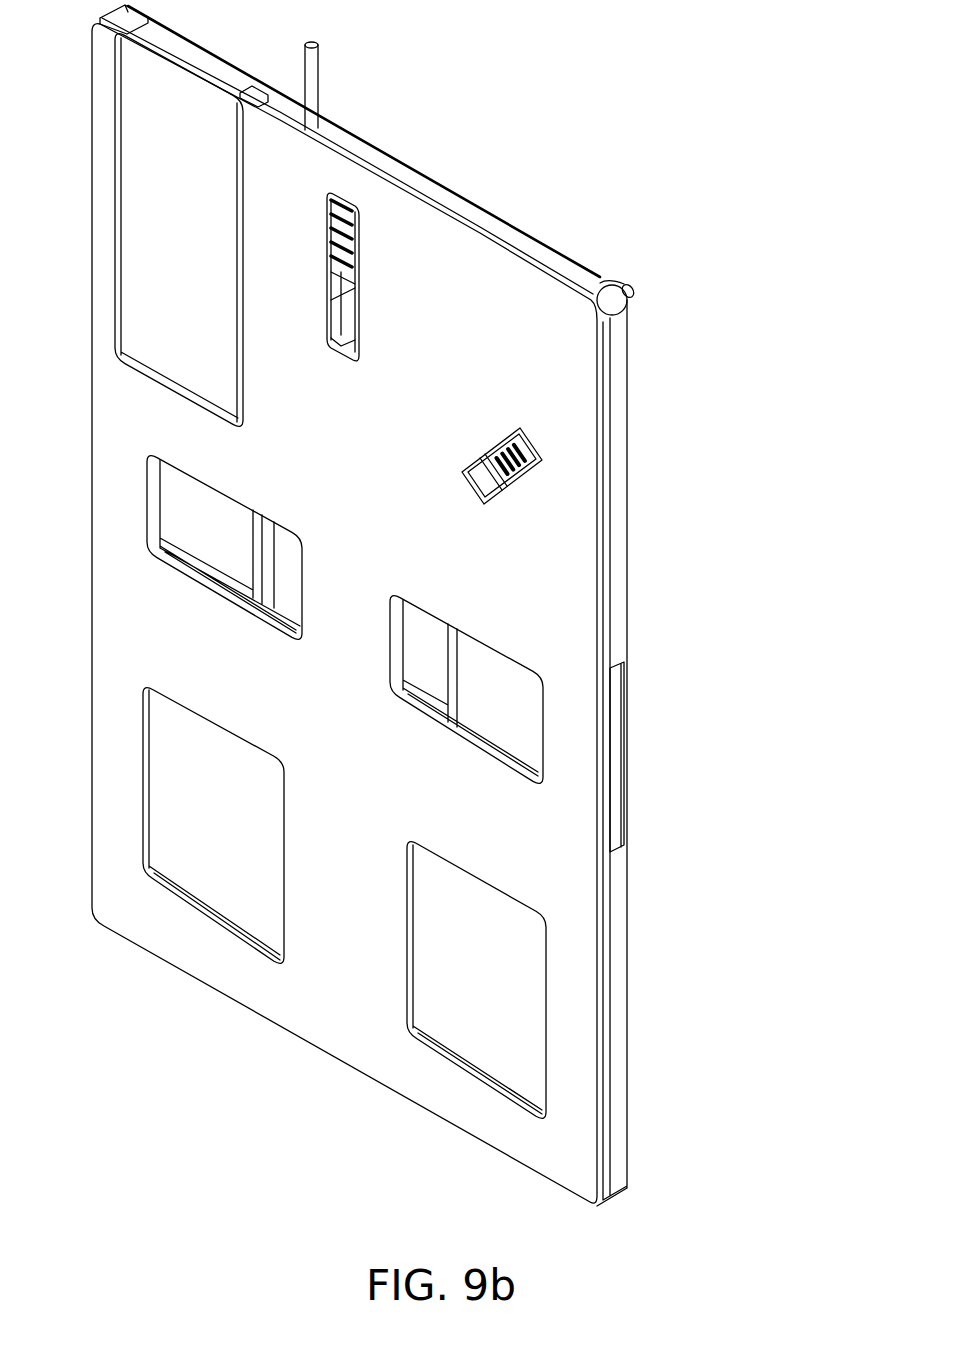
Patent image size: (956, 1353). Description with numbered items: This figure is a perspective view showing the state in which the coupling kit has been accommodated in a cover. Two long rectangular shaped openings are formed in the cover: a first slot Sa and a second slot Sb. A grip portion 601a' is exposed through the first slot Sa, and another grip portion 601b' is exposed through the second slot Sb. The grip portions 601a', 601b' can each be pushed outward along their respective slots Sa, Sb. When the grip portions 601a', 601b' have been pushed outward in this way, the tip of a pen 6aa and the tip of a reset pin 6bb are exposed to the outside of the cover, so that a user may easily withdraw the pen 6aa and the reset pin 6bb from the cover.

The reset pin 6bb is at (318, 80).
The grip portion 601b' is at (436, 220).
The second slot Sb is at (345, 288).
The pen 6aa is at (615, 298).
The grip portion 601a' is at (621, 466).
The first slot Sa is at (500, 492).